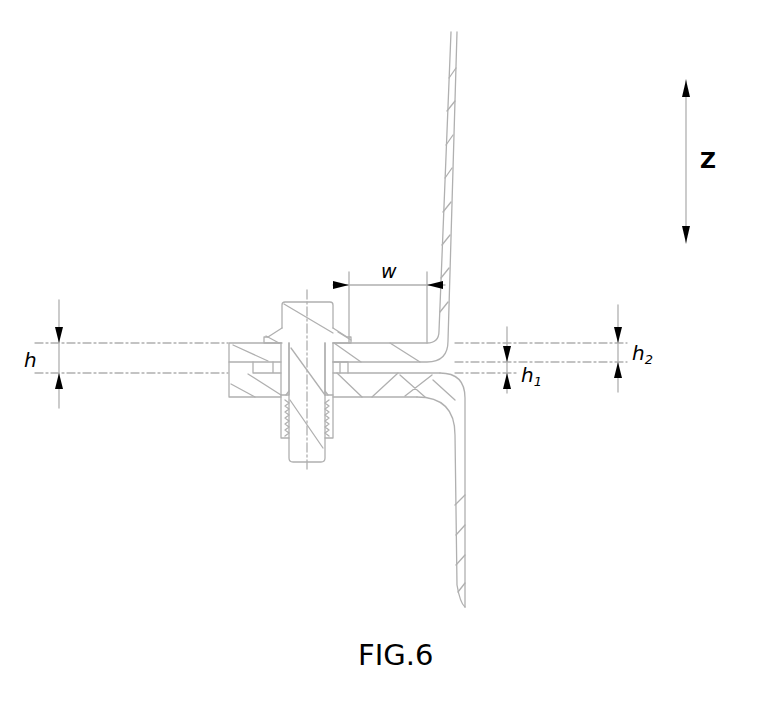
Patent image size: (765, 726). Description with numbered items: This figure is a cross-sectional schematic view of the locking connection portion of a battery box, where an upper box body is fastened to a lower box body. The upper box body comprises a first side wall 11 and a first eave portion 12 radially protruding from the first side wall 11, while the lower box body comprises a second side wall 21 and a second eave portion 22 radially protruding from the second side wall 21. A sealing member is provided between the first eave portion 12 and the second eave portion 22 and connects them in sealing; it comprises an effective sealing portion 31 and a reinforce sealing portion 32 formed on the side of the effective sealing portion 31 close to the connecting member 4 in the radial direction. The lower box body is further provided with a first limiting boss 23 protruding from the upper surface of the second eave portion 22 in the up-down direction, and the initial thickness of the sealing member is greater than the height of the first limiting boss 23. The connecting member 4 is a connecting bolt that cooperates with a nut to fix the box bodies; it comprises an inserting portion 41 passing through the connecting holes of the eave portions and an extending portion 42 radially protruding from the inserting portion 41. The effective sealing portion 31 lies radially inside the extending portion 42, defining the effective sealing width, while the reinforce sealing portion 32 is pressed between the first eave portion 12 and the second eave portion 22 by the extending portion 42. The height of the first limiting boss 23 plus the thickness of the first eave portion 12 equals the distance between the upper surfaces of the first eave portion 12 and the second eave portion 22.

The connecting member 4 is at (280, 336).
The first side wall 11 is at (450, 120).
The first eave portion 12 is at (248, 350).
The second side wall 21 is at (458, 493).
The second eave portion 22 is at (367, 382).
The first limiting boss 23 is at (277, 368).
The effective sealing portion 31 is at (418, 397).
The reinforce sealing portion 32 is at (260, 367).
The inserting portion 41 is at (318, 347).
The extending portion 42 is at (280, 347).